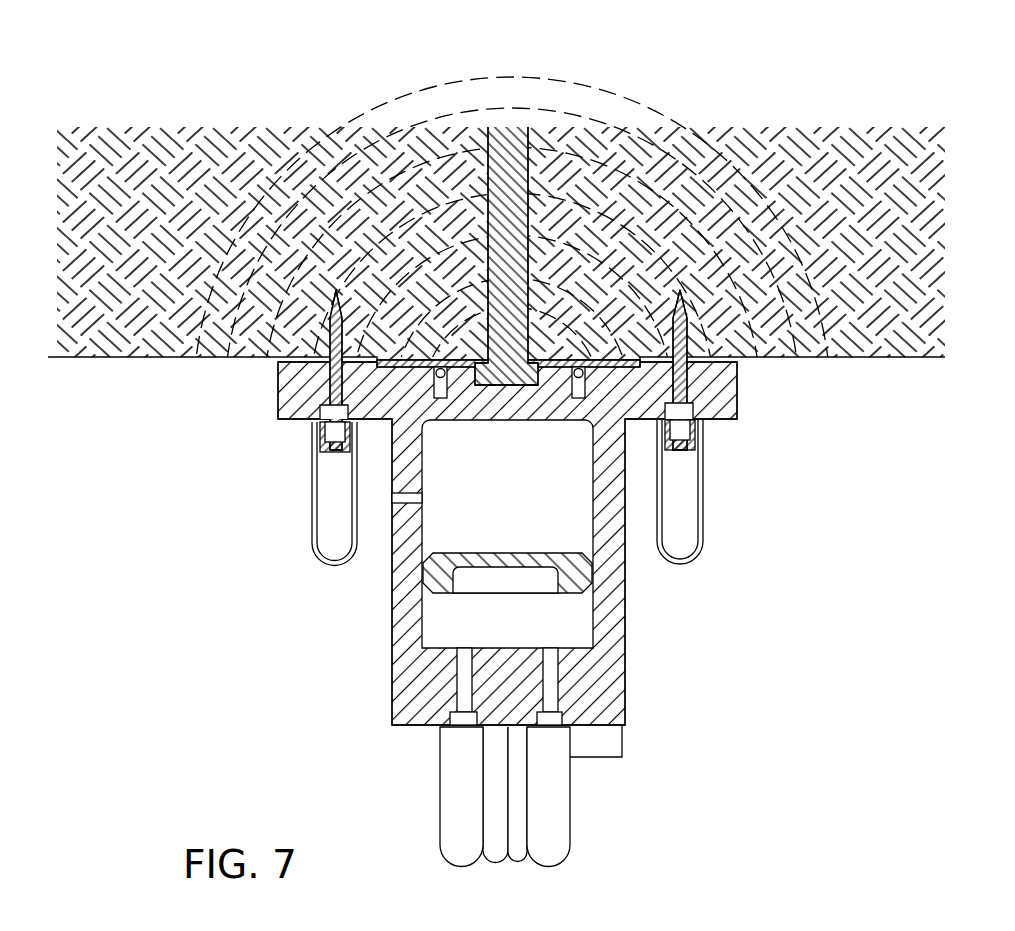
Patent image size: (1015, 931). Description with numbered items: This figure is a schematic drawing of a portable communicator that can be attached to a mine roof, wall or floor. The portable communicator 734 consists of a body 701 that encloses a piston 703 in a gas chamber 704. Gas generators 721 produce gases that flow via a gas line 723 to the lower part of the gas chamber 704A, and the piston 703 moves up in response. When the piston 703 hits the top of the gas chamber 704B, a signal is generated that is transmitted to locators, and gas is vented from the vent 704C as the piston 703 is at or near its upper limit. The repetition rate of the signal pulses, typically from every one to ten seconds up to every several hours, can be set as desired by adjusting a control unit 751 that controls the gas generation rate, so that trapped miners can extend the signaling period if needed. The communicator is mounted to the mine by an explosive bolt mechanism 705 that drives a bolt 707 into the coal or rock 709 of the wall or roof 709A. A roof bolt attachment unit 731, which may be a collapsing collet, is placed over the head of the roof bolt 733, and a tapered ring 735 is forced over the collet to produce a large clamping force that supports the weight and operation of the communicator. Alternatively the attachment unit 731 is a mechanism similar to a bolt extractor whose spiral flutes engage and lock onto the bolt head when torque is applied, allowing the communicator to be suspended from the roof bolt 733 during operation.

The body 701 is at (625, 698).
The piston 703 is at (566, 593).
The gas chamber 704 is at (592, 546).
The lower part of the gas chamber 704A is at (428, 618).
The top of the gas chamber 704B is at (503, 388).
The vent 704C is at (396, 500).
The explosive bolt mechanism 705 is at (313, 490).
The bolt 707 is at (335, 400).
The coal or rock 709 is at (852, 358).
The roof 709A is at (950, 358).
The gas generators 721 is at (570, 800).
The gas line 723 is at (460, 703).
The roof bolt attachment unit 731 is at (463, 393).
The roof bolt 733 is at (517, 127).
The portable communicator 734 is at (487, 392).
The tapered ring 735 is at (558, 390).
The control unit 751 is at (622, 743).